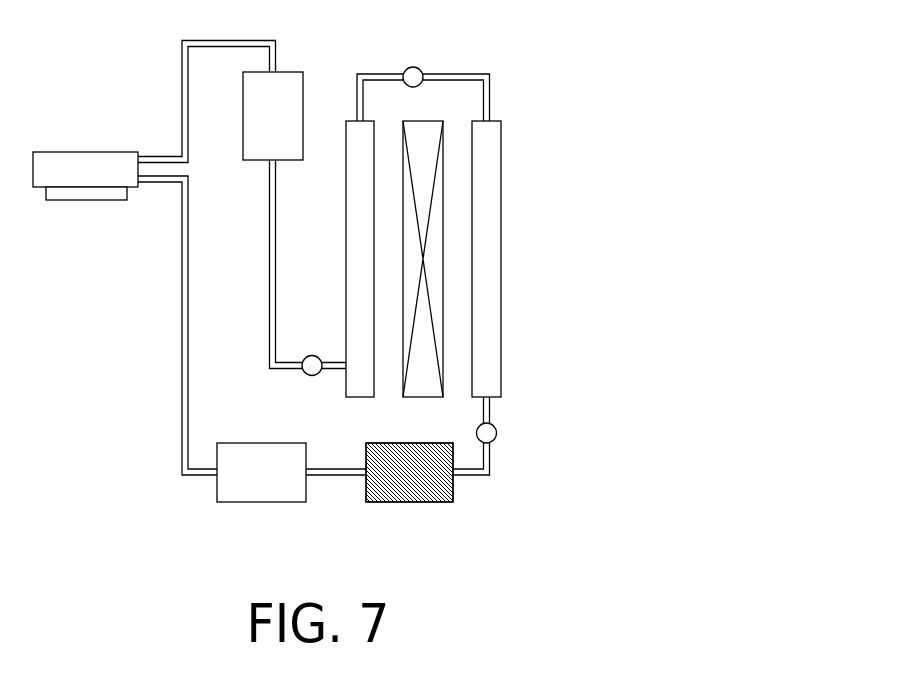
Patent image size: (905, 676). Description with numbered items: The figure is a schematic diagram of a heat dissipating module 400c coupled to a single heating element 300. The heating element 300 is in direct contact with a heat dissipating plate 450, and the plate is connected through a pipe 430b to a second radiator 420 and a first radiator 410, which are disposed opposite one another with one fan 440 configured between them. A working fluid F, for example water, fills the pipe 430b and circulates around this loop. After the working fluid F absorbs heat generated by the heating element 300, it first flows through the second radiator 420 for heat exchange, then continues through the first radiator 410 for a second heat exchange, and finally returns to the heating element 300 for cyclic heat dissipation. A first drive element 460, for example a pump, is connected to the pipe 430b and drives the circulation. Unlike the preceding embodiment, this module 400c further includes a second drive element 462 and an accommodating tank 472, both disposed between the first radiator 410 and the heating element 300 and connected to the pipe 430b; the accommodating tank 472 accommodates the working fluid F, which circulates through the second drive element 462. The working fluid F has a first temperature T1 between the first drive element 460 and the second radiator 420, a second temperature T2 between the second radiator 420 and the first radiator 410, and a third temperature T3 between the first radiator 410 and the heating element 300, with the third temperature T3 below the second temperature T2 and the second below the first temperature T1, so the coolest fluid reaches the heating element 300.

The heating element 300 is at (90, 200).
The heat dissipating module 400c is at (553, 545).
The first radiator 410 is at (487, 250).
The second radiator 420 is at (360, 383).
The pipe 430b is at (472, 73).
The fan 440 is at (425, 383).
The heat dissipating plate 450 is at (92, 165).
The first drive element 460 is at (288, 90).
The second drive element 462 is at (261, 505).
The accommodating tank 472 is at (408, 505).
The working fluid F is at (453, 484).
The first temperature T1 is at (312, 376).
The second temperature T2 is at (413, 67).
The third temperature T3 is at (497, 433).